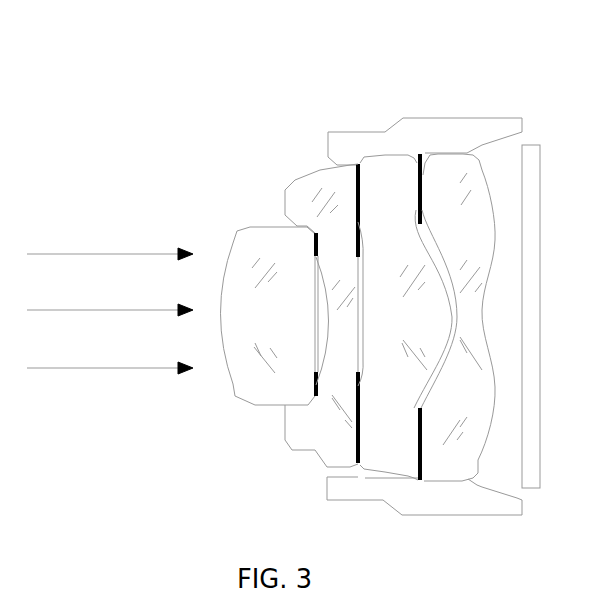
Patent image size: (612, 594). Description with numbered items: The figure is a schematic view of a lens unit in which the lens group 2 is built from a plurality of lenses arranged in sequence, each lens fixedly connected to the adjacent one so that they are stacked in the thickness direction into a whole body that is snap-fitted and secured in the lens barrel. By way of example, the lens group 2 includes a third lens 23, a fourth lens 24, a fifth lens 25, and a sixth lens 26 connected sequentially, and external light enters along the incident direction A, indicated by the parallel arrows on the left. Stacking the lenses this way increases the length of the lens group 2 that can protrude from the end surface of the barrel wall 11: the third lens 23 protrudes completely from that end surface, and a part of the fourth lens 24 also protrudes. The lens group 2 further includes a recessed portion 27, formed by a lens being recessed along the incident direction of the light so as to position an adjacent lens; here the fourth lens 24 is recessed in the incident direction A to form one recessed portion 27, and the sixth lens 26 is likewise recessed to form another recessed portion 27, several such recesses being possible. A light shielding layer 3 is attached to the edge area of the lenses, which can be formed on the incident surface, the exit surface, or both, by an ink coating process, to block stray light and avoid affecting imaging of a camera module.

The lens group 2 is at (180, 161).
The light shielding layer 3 is at (315, 383).
The barrel wall 11 is at (373, 490).
The third lens 23 is at (255, 227).
The fourth lens 24 is at (305, 193).
The fifth lens 25 is at (398, 173).
The sixth lens 26 is at (465, 173).
The recessed portion 27 is at (308, 309).
The incident direction A is at (110, 325).